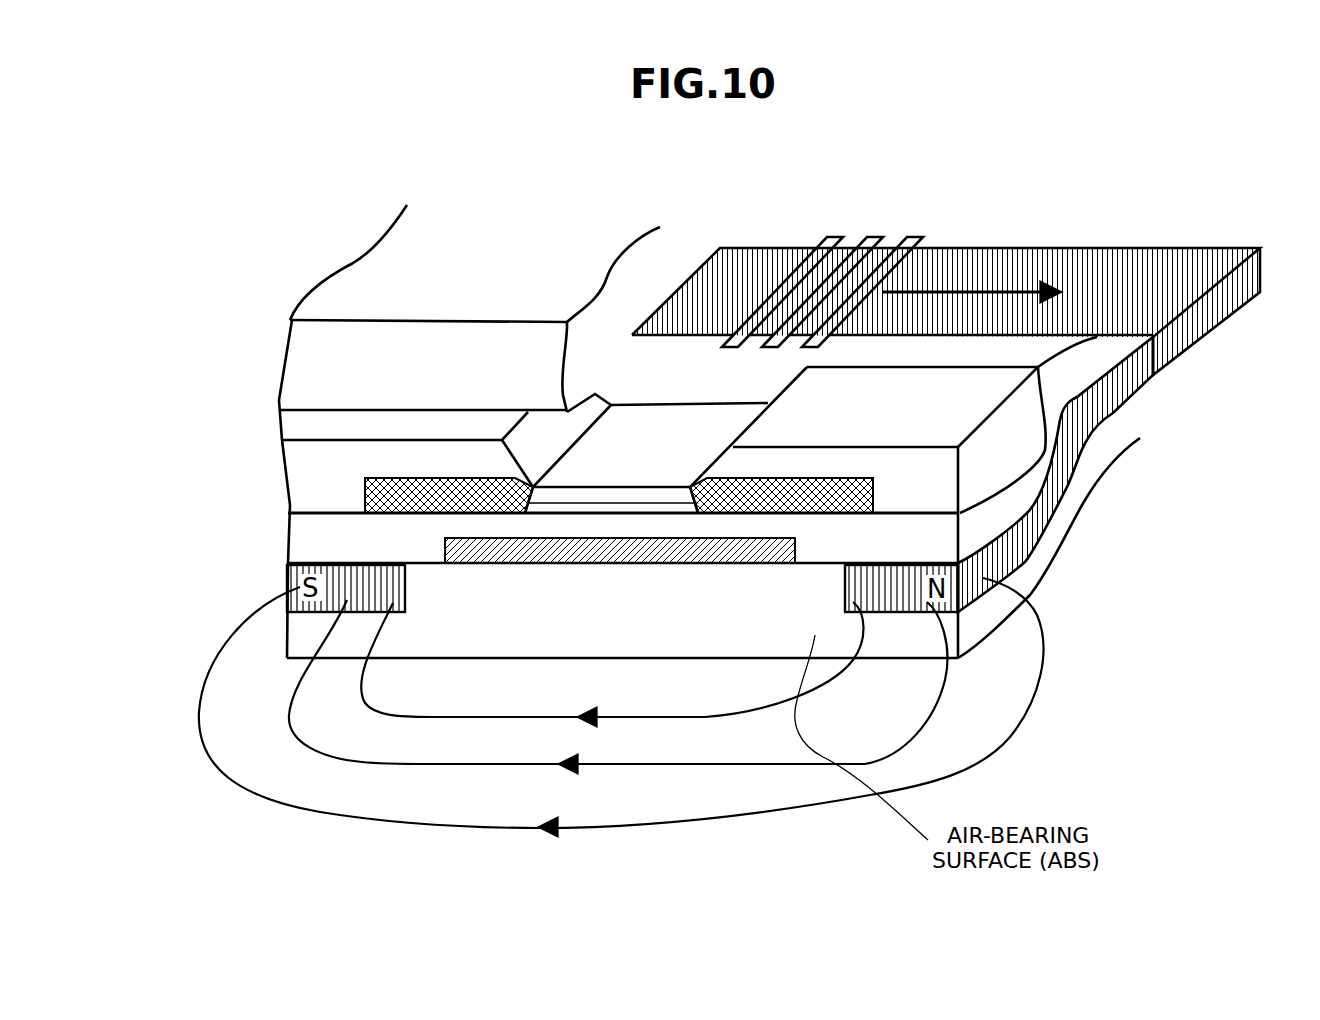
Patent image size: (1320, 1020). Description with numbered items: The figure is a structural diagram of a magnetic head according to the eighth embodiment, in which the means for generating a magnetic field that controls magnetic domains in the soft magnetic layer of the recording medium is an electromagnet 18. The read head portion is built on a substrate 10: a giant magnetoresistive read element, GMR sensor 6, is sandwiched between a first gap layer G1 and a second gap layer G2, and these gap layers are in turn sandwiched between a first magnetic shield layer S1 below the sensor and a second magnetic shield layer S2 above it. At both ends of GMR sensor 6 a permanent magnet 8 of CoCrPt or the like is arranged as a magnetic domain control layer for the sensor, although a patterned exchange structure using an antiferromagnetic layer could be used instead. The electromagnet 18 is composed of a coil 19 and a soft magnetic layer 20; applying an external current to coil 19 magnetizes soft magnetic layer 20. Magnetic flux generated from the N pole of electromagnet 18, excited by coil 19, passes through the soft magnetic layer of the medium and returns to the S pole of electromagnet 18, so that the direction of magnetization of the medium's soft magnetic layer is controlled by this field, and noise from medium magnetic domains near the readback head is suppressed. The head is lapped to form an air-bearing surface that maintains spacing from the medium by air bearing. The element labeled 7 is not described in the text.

The GMR sensor 6 is at (633, 432).
The auxiliary (return) magnetic pole 7 is at (428, 460).
The permanent magnet 8 is at (803, 514).
The substrate 10 is at (1028, 570).
The electromagnet 18 is at (1127, 165).
The coil 19 is at (883, 282).
The soft magnetic layer 20 is at (987, 273).
The first magnetic shield layer S1 is at (447, 550).
The second magnetic shield layer S2 is at (323, 358).
The first gap layer G1 is at (322, 537).
The second gap layer G2 is at (313, 425).